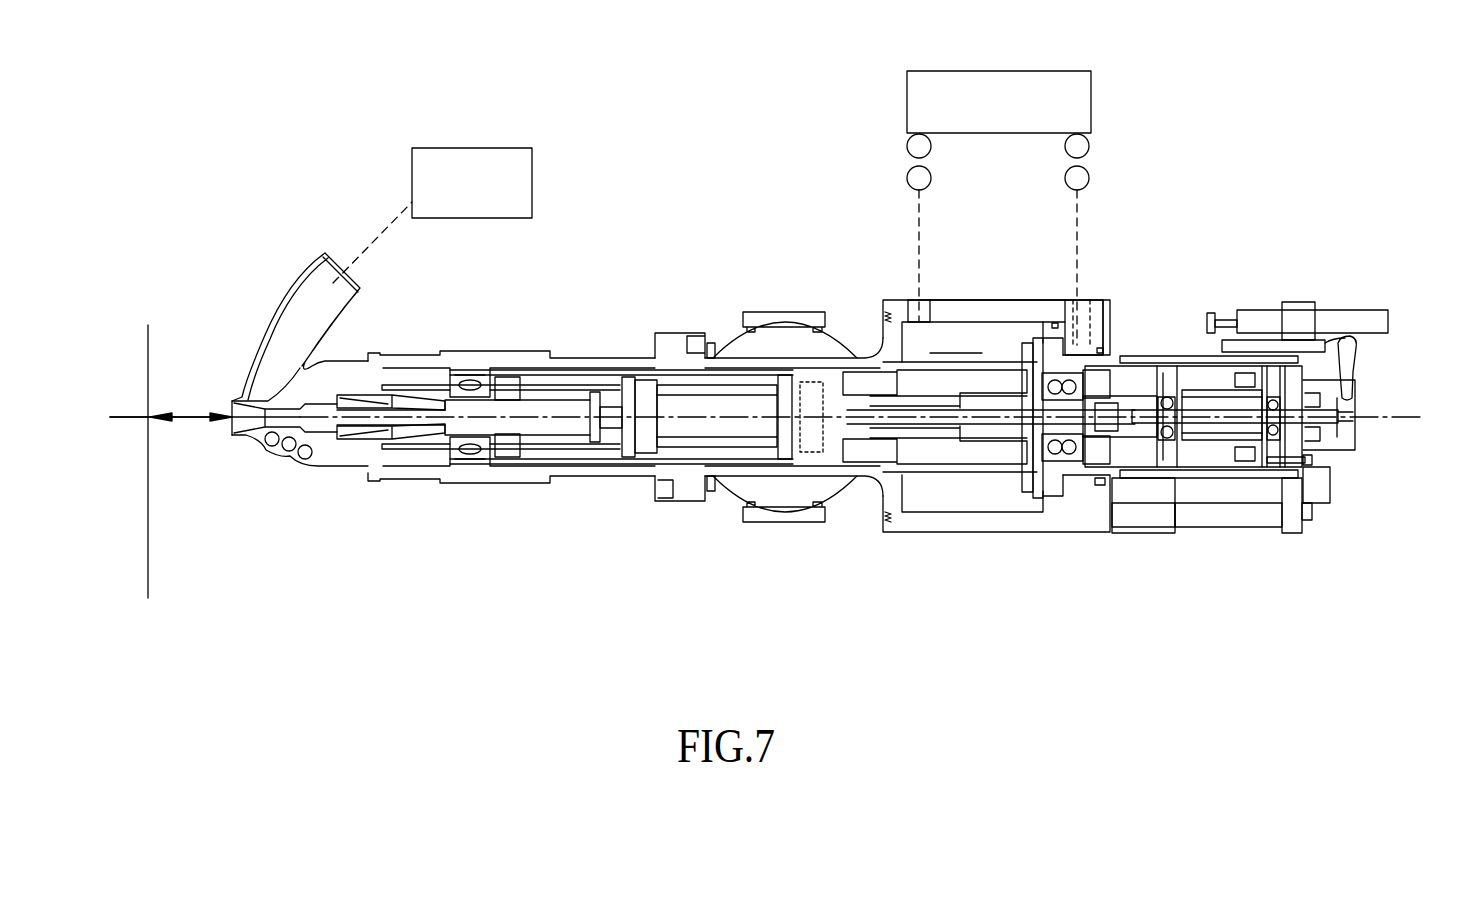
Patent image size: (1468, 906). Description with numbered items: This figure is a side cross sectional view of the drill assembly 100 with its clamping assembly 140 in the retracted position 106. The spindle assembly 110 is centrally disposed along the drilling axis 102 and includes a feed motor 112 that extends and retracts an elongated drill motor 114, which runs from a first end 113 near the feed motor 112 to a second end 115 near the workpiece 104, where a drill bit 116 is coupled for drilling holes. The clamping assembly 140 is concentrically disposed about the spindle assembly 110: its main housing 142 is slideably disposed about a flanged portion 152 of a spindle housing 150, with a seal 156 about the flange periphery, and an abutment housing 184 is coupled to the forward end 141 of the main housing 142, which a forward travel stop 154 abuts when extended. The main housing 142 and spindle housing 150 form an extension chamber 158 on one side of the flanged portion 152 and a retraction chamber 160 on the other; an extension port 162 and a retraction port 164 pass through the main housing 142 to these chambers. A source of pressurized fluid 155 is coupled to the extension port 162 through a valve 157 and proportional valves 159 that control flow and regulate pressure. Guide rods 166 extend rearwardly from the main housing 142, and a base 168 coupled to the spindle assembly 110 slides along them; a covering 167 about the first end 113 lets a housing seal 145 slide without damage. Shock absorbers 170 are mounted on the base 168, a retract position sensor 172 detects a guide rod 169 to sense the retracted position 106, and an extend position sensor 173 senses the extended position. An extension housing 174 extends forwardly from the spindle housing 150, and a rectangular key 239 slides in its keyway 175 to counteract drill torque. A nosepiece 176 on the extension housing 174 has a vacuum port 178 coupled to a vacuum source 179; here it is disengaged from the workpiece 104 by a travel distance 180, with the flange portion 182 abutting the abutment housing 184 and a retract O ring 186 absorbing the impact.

The drill assembly 100 is at (1244, 108).
The drilling axis 102 is at (147, 422).
The workpiece 104 is at (147, 395).
The retracted position 106 is at (528, 548).
The spindle assembly 110 is at (1363, 443).
The feed motor 112 is at (1216, 454).
The first end 113 is at (1205, 494).
The drill motor 114 is at (647, 384).
The second end 115 is at (352, 448).
The drill bit 116 is at (284, 418).
The clamping assembly 140 is at (772, 195).
The forward end 141 is at (858, 330).
The main housing 142 is at (970, 299).
The housing seal 145 is at (1105, 300).
The spindle housing 150 is at (955, 470).
The flanged portion 152 is at (1052, 498).
The forward travel stop 154 is at (1027, 484).
The source of pressurized fluid 155 is at (1035, 70).
The seal 156 is at (1051, 299).
The valve 157 is at (908, 142).
The extension chamber 158 is at (1093, 300).
The proportional valves 159 is at (907, 178).
The retraction chamber 160 is at (982, 417).
The extension port 162 is at (1072, 298).
The retraction port 164 is at (911, 298).
The guide rods 166 is at (1236, 519).
The covering 167 is at (1190, 348).
The base 168 is at (1290, 302).
The guide rod 169 is at (1312, 460).
The shock absorbers 170 is at (1348, 300).
The retract position sensor 172 is at (1323, 491).
The extend position sensor 173 is at (1322, 355).
The extension housing 174 is at (465, 336).
The keyway 175 is at (433, 466).
The nosepiece 176 is at (231, 428).
The vacuum port 178 is at (292, 288).
The vacuum source 179 is at (470, 147).
The travel distance 180 is at (183, 414).
The flange portion 182 is at (667, 332).
The abutment housing 184 is at (806, 311).
The retract O ring 186 is at (711, 492).
The rectangular key 239 is at (473, 482).